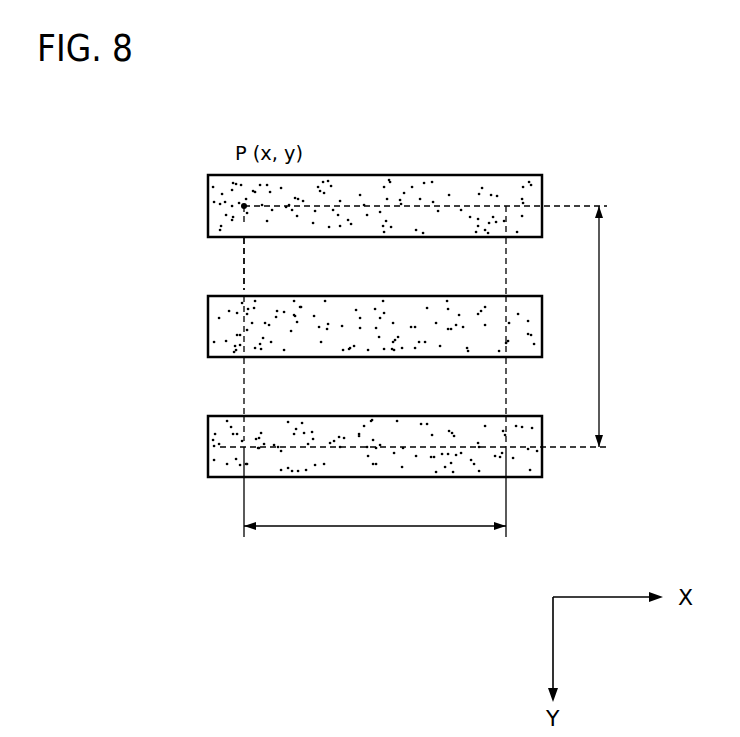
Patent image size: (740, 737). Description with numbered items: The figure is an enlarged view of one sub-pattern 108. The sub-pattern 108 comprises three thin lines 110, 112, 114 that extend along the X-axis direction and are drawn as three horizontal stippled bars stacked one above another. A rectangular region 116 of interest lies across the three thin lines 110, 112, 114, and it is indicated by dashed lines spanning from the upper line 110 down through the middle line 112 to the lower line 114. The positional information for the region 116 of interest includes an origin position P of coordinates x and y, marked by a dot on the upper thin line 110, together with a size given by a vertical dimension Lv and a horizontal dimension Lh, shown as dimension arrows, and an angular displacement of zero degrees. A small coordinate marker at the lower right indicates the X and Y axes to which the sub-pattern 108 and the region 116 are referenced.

The sub-pattern 108 is at (520, 124).
The thin line 110 is at (220, 208).
The thin line 112 is at (220, 329).
The thin line 114 is at (220, 449).
The rectangular region of interest 116 is at (264, 262).